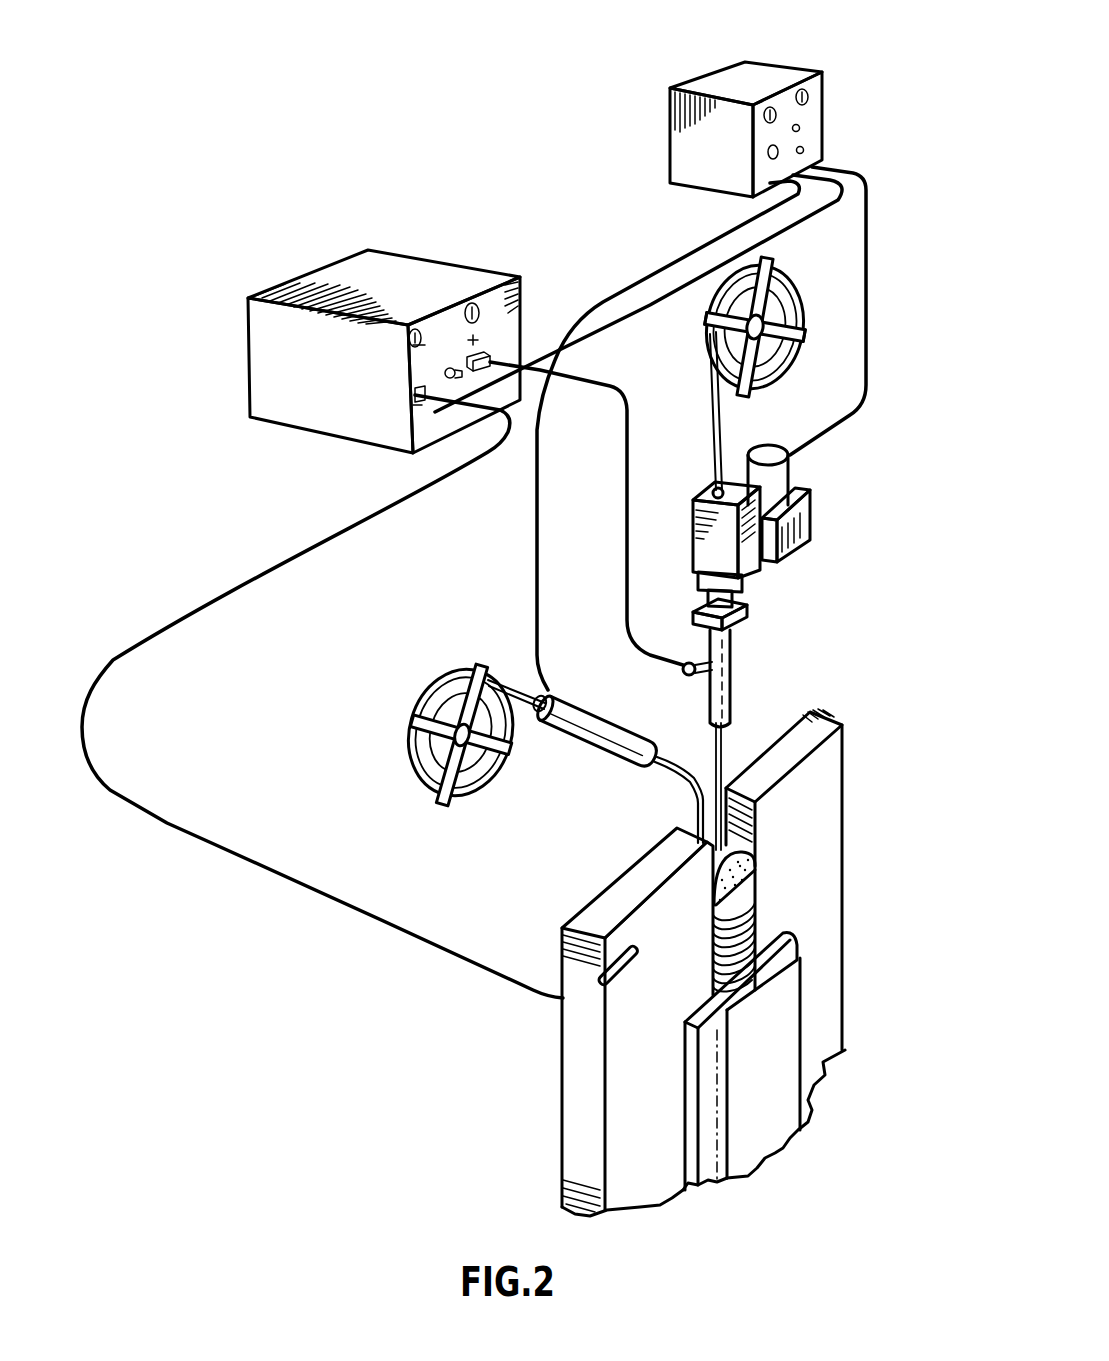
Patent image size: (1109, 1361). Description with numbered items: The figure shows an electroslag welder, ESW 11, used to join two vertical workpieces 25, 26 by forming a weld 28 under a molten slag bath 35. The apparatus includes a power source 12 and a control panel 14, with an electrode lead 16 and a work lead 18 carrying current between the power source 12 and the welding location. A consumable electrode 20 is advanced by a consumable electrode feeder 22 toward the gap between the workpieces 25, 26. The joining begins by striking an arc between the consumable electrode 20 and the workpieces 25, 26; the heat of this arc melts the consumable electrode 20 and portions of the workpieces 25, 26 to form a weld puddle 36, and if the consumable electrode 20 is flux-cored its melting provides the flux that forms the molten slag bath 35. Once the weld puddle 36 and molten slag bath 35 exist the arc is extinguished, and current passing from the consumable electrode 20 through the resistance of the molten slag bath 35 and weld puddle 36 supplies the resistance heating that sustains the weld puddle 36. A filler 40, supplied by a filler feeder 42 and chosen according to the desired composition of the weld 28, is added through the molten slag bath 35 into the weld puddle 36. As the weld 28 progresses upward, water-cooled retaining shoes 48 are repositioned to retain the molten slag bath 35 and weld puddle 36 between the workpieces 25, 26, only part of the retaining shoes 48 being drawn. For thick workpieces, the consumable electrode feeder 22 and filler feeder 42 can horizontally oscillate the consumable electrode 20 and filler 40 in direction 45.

The electroslag welder 11 is at (522, 117).
The power source 12 is at (317, 270).
The control panel 14 is at (727, 64).
The electrode lead 16 is at (628, 498).
The work lead 18 is at (465, 956).
The consumable electrode 20 is at (714, 488).
The consumable electrode feeder 22 is at (753, 558).
The workpiece 25 is at (589, 1046).
The workpiece 26 is at (848, 733).
The weld 28 is at (765, 928).
The molten slag bath 35 is at (762, 858).
The weld puddle 36 is at (755, 886).
The filler 40 is at (697, 813).
The filler feeder 42 is at (587, 748).
The direction 45 is at (656, 630).
The retaining shoes 48 is at (803, 998).